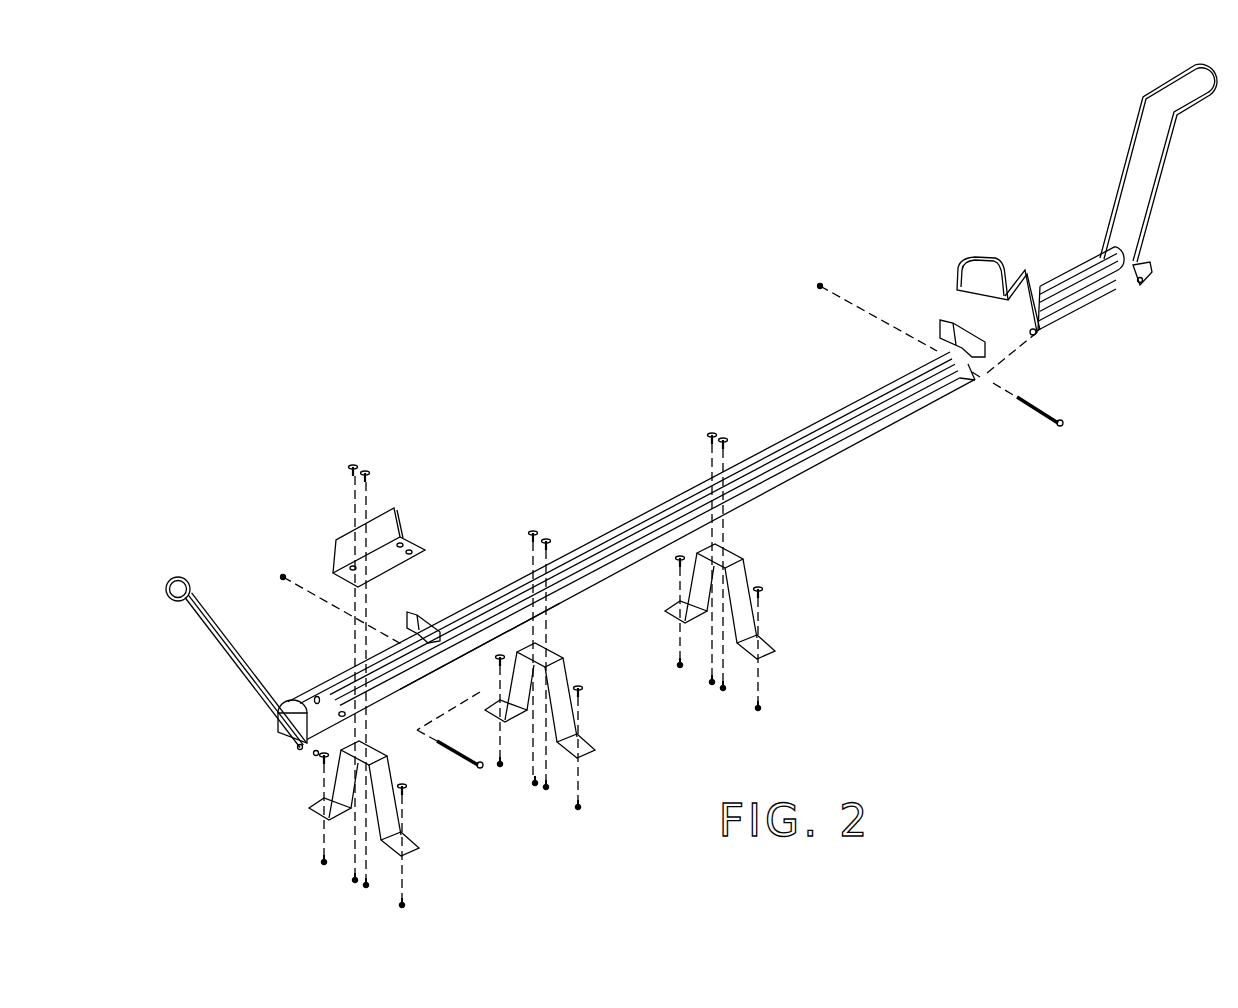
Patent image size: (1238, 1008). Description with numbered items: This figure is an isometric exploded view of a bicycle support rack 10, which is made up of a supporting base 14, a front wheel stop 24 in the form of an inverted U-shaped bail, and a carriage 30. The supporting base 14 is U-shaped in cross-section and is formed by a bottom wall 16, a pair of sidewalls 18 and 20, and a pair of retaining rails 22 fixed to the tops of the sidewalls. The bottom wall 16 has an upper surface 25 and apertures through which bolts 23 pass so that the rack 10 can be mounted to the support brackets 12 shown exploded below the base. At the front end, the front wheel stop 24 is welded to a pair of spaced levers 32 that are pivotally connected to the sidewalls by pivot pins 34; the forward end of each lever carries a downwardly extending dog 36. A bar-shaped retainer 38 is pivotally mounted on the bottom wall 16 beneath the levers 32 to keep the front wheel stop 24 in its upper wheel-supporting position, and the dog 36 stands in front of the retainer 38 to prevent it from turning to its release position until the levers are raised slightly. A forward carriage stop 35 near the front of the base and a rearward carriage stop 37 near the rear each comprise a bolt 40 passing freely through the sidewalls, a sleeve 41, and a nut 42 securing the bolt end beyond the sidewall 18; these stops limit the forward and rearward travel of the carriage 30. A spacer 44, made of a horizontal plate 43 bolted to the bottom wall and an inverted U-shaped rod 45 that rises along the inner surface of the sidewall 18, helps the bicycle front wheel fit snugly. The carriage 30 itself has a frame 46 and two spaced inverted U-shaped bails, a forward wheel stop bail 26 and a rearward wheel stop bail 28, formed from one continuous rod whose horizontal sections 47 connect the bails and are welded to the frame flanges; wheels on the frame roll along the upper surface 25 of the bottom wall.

The bicycle support rack 10 is at (686, 485).
The support brackets 12 is at (382, 771).
The supporting base 14 is at (590, 516).
The bottom wall 16 is at (281, 731).
The sidewall 18 is at (335, 677).
The sidewall 20 is at (639, 561).
The retaining rails 22 is at (638, 540).
The bolts 23 is at (546, 538).
The front wheel stop 24 is at (178, 576).
The upper surface 25 is at (488, 618).
The bail 26 is at (982, 267).
The bail 28 is at (1160, 193).
The carriage 30 is at (1087, 199).
The levers 32 is at (278, 716).
The pivot pins 34 is at (345, 714).
The forward carriage stop 35 is at (478, 657).
The dog 36 is at (305, 746).
The rearward carriage stop 37 is at (976, 404).
The retainer 38 is at (315, 753).
The bolt 40 is at (477, 768).
The sleeve 41 is at (420, 614).
The nut 42 is at (282, 574).
The horizontal plate 43 is at (402, 544).
The spacer 44 is at (366, 518).
The inverted U-shaped rod 45 is at (388, 512).
The frame 46 is at (1114, 302).
The horizontal sections 47 is at (1052, 280).